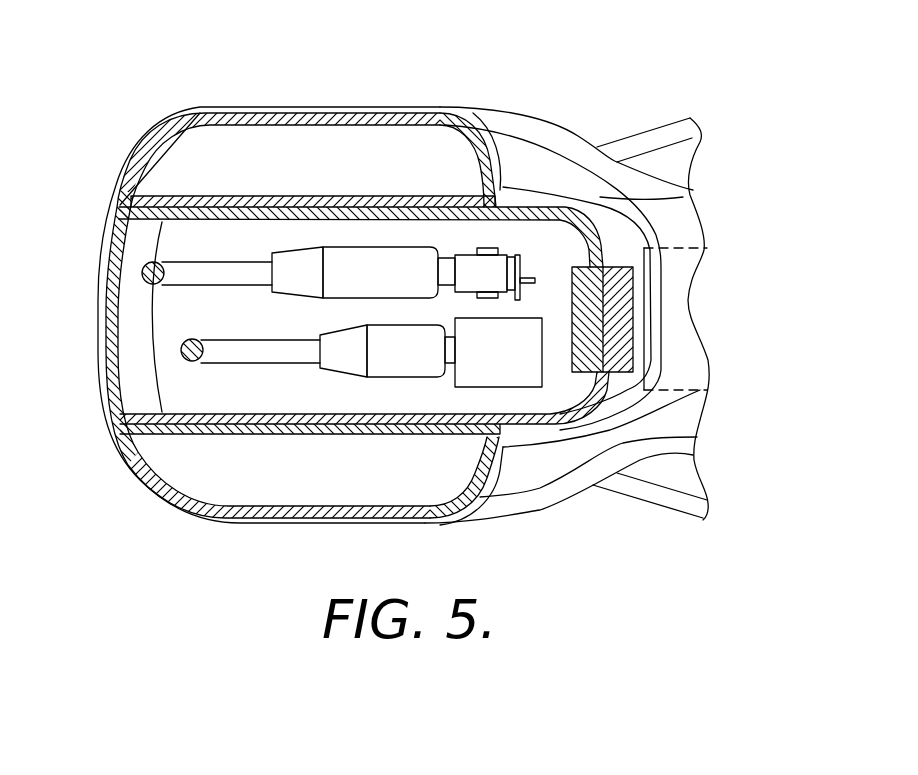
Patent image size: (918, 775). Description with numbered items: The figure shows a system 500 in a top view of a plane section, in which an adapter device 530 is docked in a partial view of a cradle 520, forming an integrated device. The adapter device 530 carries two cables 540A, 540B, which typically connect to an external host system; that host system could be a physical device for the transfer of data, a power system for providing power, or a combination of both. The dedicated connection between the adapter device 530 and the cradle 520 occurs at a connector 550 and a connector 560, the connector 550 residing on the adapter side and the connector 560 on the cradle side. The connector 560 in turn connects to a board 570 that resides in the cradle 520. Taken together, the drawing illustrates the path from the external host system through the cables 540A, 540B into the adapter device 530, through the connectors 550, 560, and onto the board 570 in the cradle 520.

The system 500 is at (70, 96).
The cradle 520 is at (548, 500).
The adapter device 530 is at (106, 347).
The cable 540A is at (188, 260).
The cable 540B is at (266, 367).
The connector 550 is at (577, 266).
The connector 560 is at (690, 207).
The board 570 is at (684, 247).